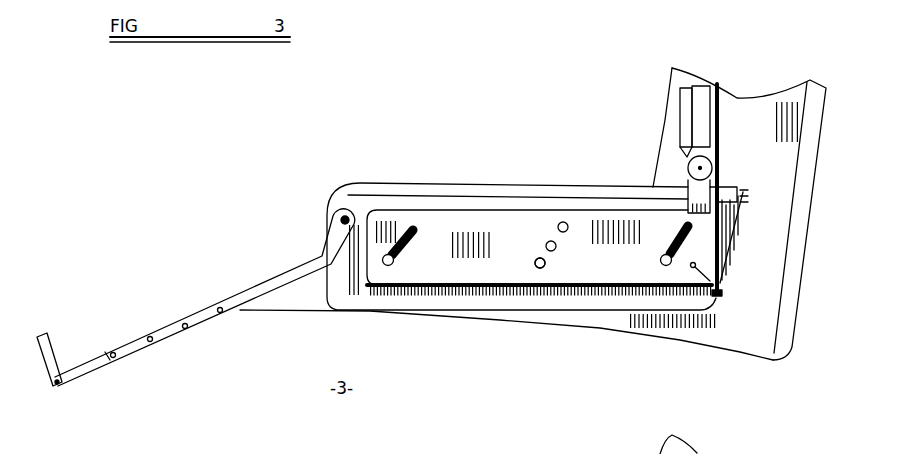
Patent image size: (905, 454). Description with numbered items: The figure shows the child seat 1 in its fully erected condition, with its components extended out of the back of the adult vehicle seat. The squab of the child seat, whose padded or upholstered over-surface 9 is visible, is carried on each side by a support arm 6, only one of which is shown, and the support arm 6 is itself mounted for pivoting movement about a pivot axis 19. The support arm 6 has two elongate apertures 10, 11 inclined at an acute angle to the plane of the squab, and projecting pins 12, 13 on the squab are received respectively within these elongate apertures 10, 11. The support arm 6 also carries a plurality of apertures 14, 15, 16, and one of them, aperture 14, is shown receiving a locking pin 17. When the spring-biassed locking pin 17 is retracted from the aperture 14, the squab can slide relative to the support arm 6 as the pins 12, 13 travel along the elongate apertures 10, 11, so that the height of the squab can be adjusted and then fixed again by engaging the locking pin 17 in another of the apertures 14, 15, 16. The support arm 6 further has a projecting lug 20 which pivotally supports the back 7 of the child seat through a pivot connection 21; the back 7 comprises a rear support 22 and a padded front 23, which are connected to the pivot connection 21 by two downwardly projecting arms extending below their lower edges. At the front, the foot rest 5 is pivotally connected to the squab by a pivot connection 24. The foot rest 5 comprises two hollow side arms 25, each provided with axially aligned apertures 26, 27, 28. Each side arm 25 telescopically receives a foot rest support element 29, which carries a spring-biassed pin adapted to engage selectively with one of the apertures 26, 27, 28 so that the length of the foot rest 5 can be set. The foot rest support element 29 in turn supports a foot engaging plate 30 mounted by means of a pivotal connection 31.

The child seat 1 is at (325, 165).
The foot rest 5 is at (201, 294).
The support arm 6 is at (480, 262).
The back 7 is at (722, 98).
The over-surface 9 is at (400, 184).
The elongate aperture 10 is at (412, 243).
The elongate aperture 11 is at (693, 268).
The projecting pin 12 is at (389, 266).
The projecting pin 13 is at (668, 266).
The aperture 14 is at (536, 258).
The aperture 15 is at (549, 241).
The aperture 16 is at (565, 222).
The locking pin 17 is at (544, 268).
The pivot axis 19 is at (723, 295).
The projecting lug 20 is at (733, 200).
The pivot connection 21 is at (722, 137).
The rear support 22 is at (714, 105).
The padded front 23 is at (690, 110).
The pivot connection 24 is at (343, 219).
The side arm 25 is at (267, 290).
The aperture 26 is at (160, 342).
The aperture 27 is at (195, 330).
The aperture 28 is at (228, 312).
The foot rest support element 29 is at (98, 362).
The foot engaging plate 30 is at (55, 352).
The pivotal connection 31 is at (57, 386).